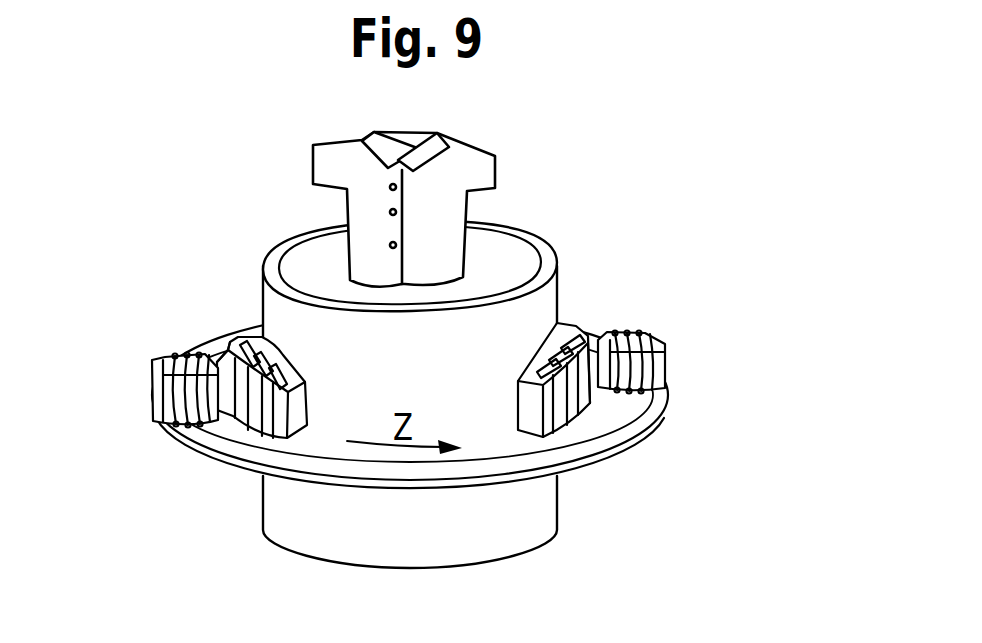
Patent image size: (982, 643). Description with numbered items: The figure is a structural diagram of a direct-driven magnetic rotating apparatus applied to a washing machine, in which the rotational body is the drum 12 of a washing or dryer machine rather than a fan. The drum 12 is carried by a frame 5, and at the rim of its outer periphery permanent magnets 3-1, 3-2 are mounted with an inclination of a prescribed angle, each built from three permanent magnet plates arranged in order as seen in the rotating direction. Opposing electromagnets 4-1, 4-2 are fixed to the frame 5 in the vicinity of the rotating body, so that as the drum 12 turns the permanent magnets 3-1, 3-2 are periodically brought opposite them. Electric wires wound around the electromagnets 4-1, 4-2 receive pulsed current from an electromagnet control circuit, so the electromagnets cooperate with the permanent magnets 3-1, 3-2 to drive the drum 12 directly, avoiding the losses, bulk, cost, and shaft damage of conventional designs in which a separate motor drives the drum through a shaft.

The drum 12 is at (533, 238).
The frame 5 is at (637, 421).
The permanent magnet 3-1 is at (312, 399).
The permanent magnet 3-2 is at (518, 408).
The electromagnet 4-1 is at (155, 393).
The electromagnet 4-2 is at (665, 367).